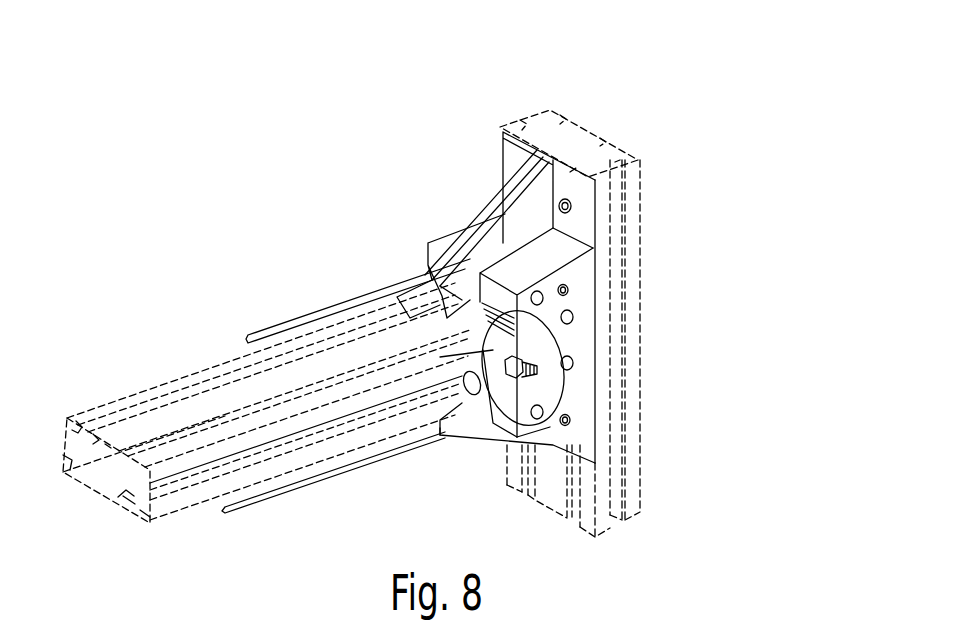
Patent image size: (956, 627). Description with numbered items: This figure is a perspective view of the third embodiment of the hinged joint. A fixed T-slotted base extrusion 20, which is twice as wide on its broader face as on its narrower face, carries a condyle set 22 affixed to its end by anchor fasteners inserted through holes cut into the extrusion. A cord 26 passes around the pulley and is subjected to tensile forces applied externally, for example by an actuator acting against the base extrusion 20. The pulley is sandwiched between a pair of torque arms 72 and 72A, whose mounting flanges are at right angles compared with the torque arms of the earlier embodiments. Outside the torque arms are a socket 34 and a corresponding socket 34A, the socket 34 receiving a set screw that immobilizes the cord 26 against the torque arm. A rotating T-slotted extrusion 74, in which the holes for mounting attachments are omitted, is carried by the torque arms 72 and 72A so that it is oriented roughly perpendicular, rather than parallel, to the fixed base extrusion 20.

The T-slotted base extrusion 20 is at (222, 403).
The condyle set 22 is at (515, 397).
The cord 26 is at (343, 308).
The socket 34 is at (583, 298).
The socket 34A is at (457, 243).
The torque arm 72 is at (585, 442).
The torque arm 72A is at (510, 163).
The rotating t-slotted extrusion 74 is at (632, 354).